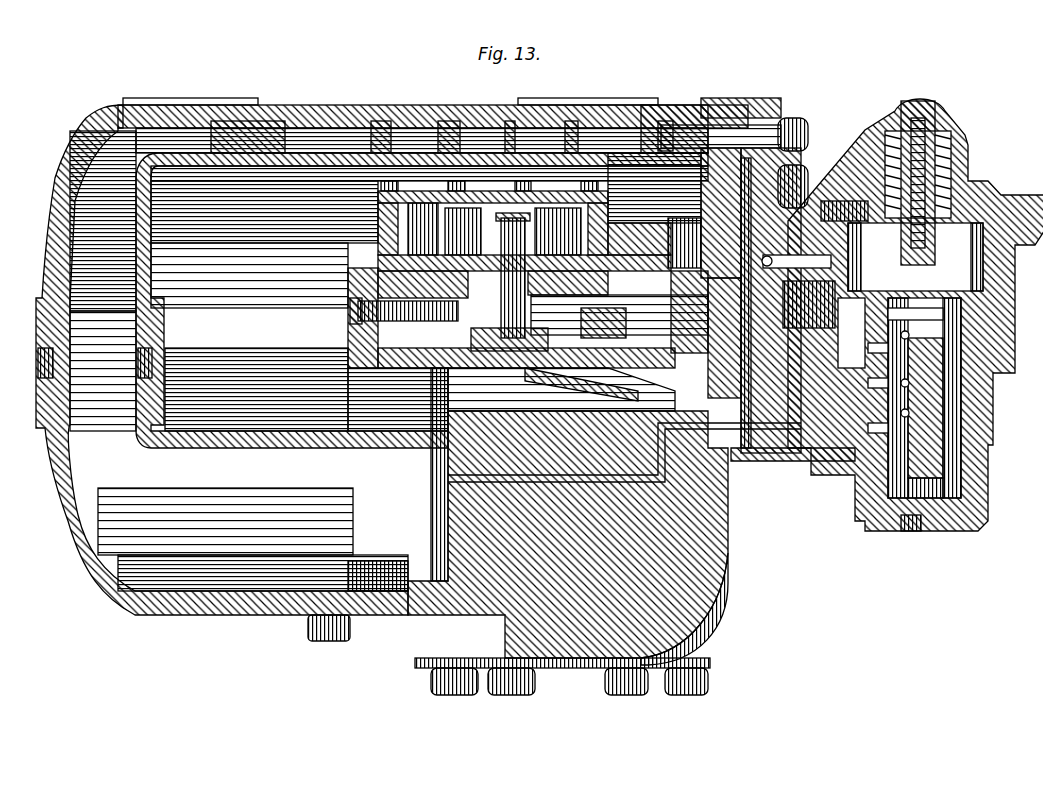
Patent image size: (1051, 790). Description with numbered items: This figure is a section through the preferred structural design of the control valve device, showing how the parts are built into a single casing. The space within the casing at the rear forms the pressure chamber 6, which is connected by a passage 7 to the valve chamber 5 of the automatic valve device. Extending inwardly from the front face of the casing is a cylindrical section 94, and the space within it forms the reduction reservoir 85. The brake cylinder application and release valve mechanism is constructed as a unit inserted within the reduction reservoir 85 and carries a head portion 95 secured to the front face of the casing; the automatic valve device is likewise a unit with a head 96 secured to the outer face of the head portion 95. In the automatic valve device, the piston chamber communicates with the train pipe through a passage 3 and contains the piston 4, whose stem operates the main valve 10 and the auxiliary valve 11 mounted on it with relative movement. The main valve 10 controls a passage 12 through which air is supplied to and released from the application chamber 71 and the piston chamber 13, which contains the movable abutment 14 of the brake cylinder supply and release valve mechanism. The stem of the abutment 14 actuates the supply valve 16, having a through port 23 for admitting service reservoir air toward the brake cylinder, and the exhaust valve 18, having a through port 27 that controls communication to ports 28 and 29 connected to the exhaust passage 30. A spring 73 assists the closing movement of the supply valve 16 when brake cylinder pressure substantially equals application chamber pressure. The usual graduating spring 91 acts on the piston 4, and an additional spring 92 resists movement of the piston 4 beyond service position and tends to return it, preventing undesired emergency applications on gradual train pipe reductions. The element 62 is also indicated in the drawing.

The passage 3 is at (783, 250).
The piston 4 is at (853, 290).
The valve chamber 5 is at (943, 331).
The pressure chamber 6 is at (242, 545).
The passage 7 is at (775, 450).
The main valve 10 is at (905, 380).
The auxiliary valve 11 is at (912, 405).
The passage 12 is at (640, 133).
The piston chamber 13 is at (697, 223).
The movable abutment 14 is at (700, 350).
The supply valve 16 is at (520, 237).
The exhaust valve 18 is at (553, 318).
The through port 23 is at (600, 226).
The through port 27 is at (575, 323).
The port 28 is at (520, 335).
The port 29 is at (580, 337).
The exhaust passage 30 is at (640, 390).
The valve seat 62 is at (896, 360).
The application chamber 71 is at (470, 117).
The spring 73 is at (368, 333).
The reduction reservoir 85 is at (185, 400).
The graduating spring 91 is at (920, 228).
The spring 92 is at (962, 153).
The cylindrical section 94 is at (235, 438).
The head portion 95 is at (723, 113).
The head 96 is at (753, 160).